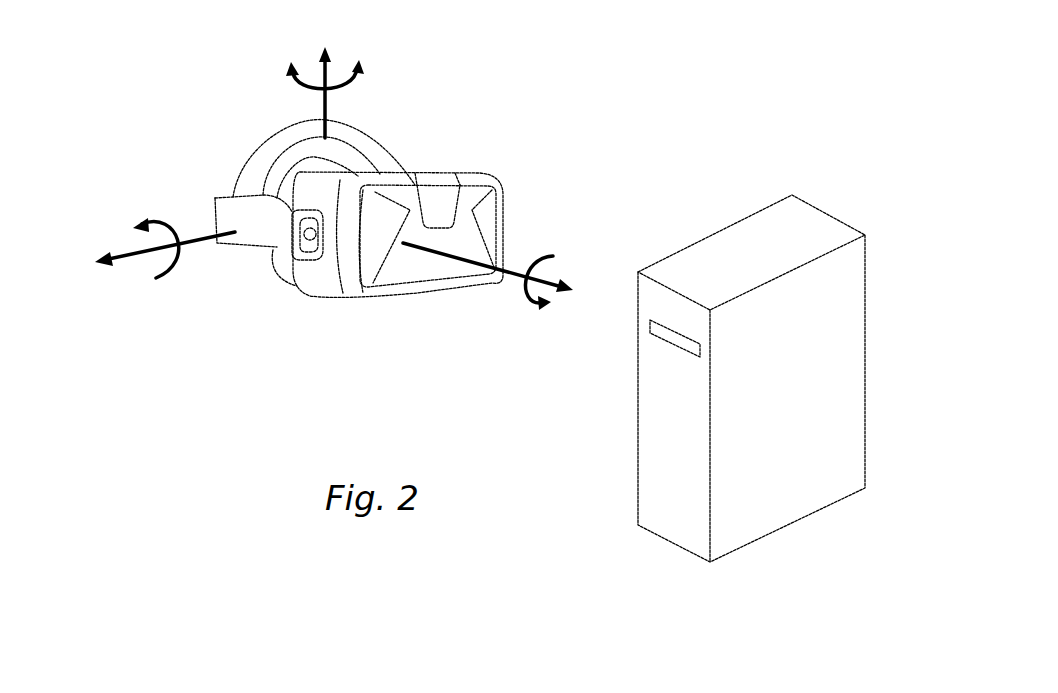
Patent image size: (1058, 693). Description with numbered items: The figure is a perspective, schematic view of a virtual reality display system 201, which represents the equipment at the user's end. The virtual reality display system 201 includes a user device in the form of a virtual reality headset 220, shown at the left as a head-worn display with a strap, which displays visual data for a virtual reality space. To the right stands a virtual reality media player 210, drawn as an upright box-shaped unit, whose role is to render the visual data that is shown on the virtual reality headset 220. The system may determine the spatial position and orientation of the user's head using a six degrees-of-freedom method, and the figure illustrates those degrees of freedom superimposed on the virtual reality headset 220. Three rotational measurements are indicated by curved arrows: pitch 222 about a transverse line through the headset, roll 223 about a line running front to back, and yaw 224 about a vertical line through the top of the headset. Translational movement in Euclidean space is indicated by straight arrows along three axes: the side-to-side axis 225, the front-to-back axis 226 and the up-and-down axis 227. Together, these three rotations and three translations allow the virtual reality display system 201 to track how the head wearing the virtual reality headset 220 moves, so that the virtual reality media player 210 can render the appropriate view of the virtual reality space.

The virtual reality display system 201 is at (630, 94).
The virtual reality media player 210 is at (803, 517).
The virtual reality headset 220 is at (417, 293).
The pitch 222 is at (177, 273).
The roll 223 is at (538, 248).
The yaw 224 is at (290, 80).
The side-to-side axis 225 is at (122, 252).
The front-to-back axis 226 is at (500, 270).
The up-and-down axis 227 is at (325, 108).